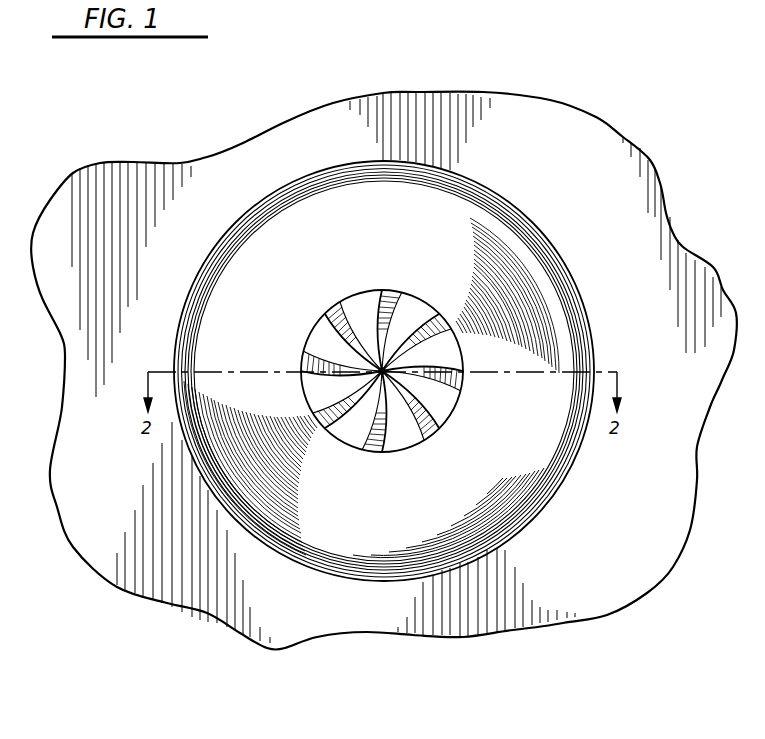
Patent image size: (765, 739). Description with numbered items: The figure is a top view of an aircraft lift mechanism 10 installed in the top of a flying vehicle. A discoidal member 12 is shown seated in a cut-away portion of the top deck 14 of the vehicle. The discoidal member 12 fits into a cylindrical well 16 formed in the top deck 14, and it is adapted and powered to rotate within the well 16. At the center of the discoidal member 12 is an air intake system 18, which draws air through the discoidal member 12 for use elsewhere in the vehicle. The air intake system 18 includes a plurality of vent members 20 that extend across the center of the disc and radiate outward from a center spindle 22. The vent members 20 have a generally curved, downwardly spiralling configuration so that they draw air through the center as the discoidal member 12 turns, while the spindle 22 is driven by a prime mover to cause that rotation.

The aircraft lift mechanism 10 is at (608, 116).
The discoidal member 12 is at (266, 308).
The top deck 14 is at (605, 214).
The cylindrical well 16 is at (486, 187).
The air intake system 18 is at (372, 287).
The vent members 20 is at (430, 428).
The center spindle 22 is at (428, 395).